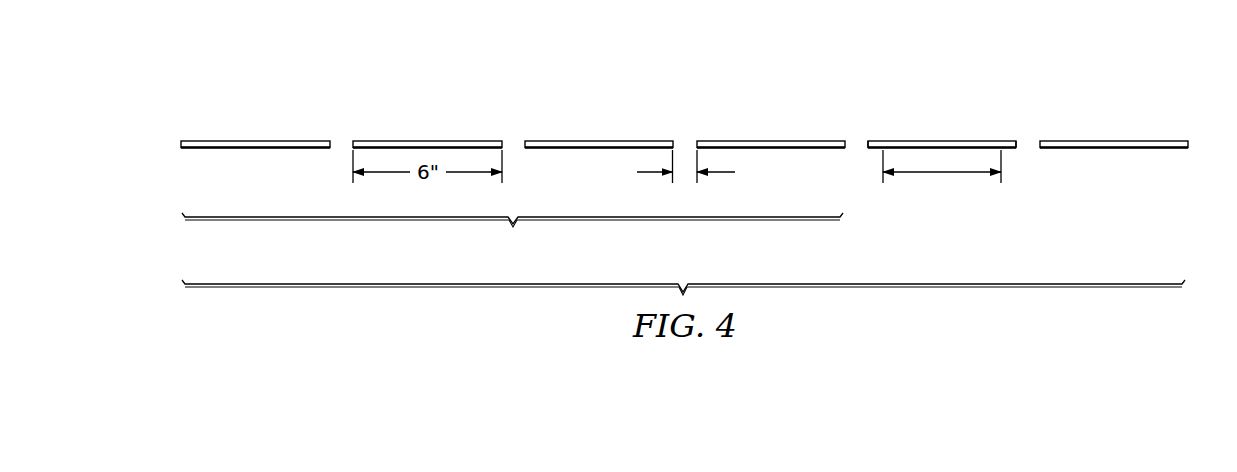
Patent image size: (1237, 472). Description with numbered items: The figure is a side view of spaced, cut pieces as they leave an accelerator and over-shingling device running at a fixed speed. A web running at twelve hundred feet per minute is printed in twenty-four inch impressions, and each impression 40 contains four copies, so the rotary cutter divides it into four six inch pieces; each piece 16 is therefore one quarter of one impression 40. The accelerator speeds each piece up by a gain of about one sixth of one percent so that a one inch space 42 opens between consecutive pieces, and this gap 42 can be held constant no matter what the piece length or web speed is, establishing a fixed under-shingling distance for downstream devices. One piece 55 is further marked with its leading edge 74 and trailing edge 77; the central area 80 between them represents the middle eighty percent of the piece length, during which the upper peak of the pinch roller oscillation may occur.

The piece 16 is at (388, 141).
The space 42 is at (679, 134).
The piece 55 is at (942, 116).
The trailing edge 77 is at (868, 141).
The leading edge 74 is at (1016, 141).
The central area 80 is at (942, 174).
The impression 40 is at (512, 234).